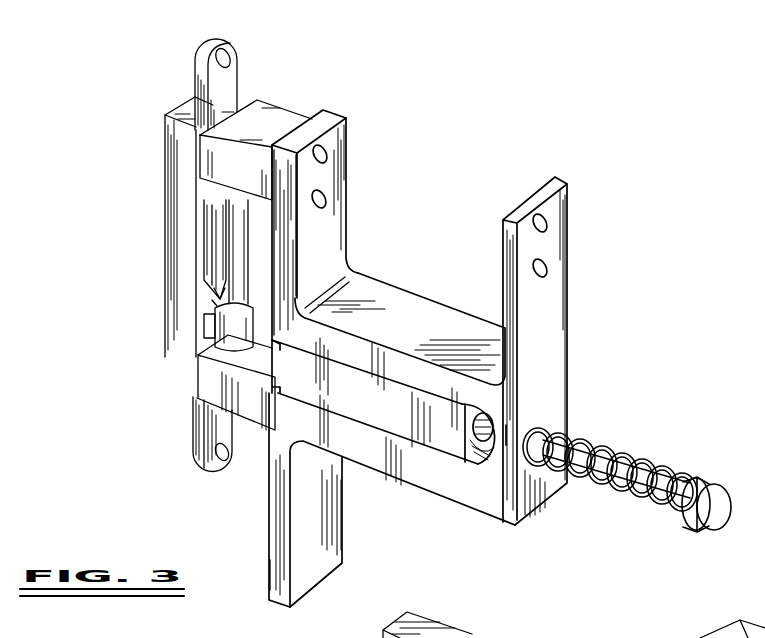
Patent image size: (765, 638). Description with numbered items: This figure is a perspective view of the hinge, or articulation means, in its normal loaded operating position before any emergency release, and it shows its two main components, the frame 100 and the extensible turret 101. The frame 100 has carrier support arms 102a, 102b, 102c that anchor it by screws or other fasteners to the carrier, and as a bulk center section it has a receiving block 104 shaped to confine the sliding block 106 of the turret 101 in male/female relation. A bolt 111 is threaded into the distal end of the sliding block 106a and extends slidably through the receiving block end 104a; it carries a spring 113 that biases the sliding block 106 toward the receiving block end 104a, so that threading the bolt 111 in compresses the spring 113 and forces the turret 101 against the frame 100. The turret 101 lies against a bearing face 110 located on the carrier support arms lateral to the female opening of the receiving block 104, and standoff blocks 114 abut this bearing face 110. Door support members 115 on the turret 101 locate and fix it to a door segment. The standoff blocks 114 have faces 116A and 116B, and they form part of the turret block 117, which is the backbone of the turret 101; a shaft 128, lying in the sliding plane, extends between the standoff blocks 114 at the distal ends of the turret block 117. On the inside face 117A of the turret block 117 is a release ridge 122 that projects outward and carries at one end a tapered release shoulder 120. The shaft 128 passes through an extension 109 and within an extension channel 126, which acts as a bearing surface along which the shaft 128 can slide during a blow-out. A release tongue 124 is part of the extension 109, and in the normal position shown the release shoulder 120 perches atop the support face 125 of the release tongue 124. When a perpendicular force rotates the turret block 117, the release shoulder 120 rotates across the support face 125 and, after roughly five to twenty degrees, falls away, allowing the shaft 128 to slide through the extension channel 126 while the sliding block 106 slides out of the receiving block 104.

The frame 100 is at (403, 477).
The extensible turret 101 is at (135, 84).
The carrier support arm 102a is at (335, 524).
The carrier support arm 102b is at (336, 140).
The carrier support arm 102c is at (549, 240).
The receiving block 104 is at (428, 330).
The receiving block end 104a is at (504, 432).
The sliding block 106 is at (376, 407).
The distal end of sliding block 106a is at (455, 440).
The extension 109 is at (176, 341).
The bearing face 110 is at (268, 524).
The bolt 111 is at (600, 462).
The spring 113 is at (614, 490).
The standoff block 114 is at (268, 133).
The door support member 115 is at (238, 72).
The face of standoff block 116A is at (258, 176).
The face of standoff block 116B is at (295, 112).
The turret block 117 is at (166, 197).
The inside face of turret block 117A is at (204, 330).
The release shoulder 120 is at (213, 291).
The release ridge 122 is at (206, 222).
The release tongue 124 is at (214, 315).
The support face 125 is at (212, 304).
The extension channel 126 is at (197, 380).
The shaft 128 is at (250, 246).